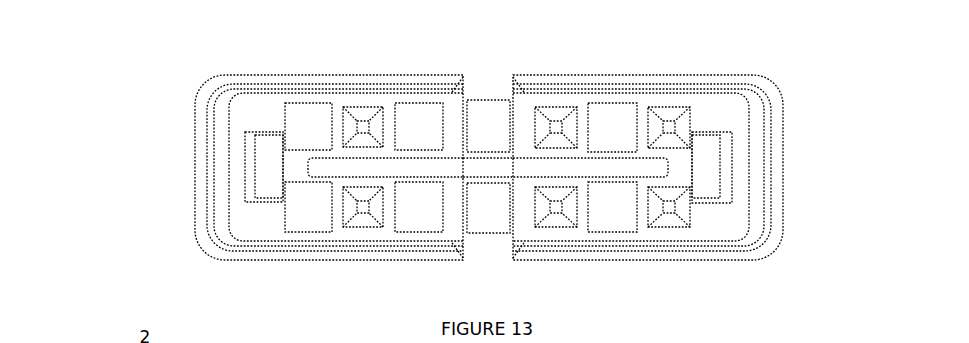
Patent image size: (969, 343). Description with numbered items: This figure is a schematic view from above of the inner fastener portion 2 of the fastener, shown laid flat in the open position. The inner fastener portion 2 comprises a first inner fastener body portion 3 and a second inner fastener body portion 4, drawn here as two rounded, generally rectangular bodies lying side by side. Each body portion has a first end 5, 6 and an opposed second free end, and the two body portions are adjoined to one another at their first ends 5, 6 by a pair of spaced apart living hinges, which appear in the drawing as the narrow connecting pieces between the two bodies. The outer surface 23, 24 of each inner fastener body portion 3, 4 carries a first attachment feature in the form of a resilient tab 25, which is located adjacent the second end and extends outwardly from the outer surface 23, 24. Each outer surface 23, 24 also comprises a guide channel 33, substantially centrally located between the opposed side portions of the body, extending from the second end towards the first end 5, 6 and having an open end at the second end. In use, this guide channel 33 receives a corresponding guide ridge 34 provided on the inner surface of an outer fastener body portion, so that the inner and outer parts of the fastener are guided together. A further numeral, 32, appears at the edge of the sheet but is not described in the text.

The inner fastener portion 2 is at (168, 127).
The first inner fastener body portion 3 is at (567, 80).
The second inner fastener body portion 4 is at (357, 87).
The first end 5 is at (513, 223).
The first end 6 is at (460, 217).
The outer surface 23 is at (709, 220).
The outer surface 24 is at (245, 220).
The resilient tab 25 is at (267, 179).
The pin 32 is at (750, 342).
The guide channel 33 is at (638, 162).
The guide ridge 34 is at (360, 166).